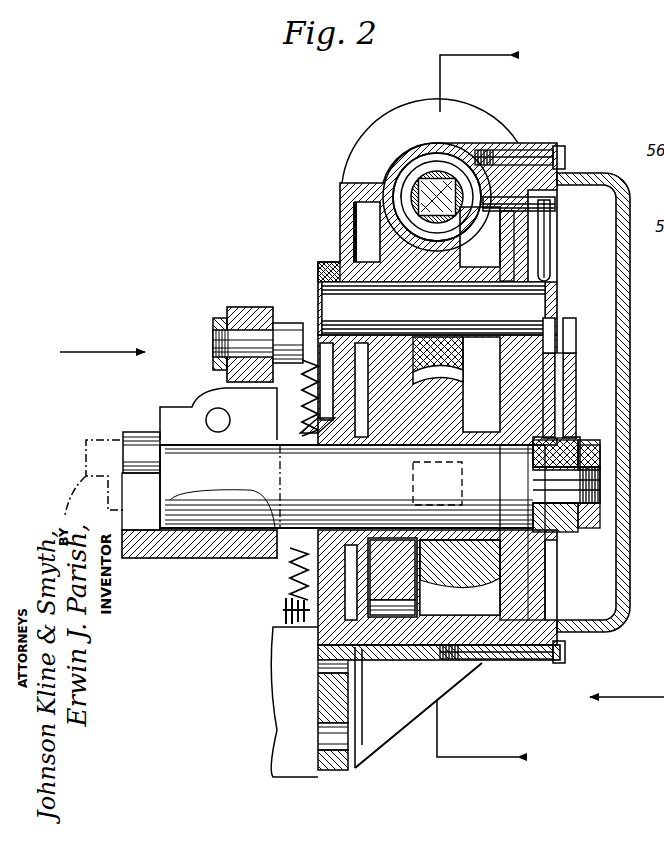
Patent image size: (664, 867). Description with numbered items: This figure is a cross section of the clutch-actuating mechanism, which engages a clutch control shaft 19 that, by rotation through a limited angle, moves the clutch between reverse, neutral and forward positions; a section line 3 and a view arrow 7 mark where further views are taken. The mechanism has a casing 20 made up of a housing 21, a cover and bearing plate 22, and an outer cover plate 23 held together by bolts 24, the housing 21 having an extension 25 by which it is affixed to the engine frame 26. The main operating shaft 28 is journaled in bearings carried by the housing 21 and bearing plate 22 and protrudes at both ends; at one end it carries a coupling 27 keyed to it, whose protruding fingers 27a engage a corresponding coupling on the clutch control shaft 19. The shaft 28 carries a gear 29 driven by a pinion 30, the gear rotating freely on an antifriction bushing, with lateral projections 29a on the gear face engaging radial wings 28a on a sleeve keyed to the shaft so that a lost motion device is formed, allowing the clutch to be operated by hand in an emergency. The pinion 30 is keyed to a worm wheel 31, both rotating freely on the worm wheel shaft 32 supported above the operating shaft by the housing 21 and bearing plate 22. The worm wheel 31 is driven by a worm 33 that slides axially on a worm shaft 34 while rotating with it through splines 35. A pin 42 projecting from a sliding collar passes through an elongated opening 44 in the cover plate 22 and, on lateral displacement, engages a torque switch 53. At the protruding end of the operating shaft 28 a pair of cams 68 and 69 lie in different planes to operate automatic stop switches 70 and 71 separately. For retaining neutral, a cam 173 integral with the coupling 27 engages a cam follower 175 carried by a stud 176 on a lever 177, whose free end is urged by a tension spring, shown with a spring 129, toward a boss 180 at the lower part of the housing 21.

The section line 3- 3 is at (550, 406).
The view arrow 7 is at (92, 352).
The clutch control shaft 19 is at (99, 440).
The casing 20 is at (336, 192).
The housing 21 is at (340, 222).
The cover and bearing plate 22 is at (548, 258).
The outer cover plate 23 is at (630, 265).
The bolts 24 is at (565, 157).
The extension 25 is at (318, 698).
The engine frame 26 is at (290, 662).
The coupling 27 is at (212, 556).
The protruding fingers 27a is at (143, 436).
The main operating shaft 28 is at (180, 540).
The radial wings 28a is at (462, 584).
The gear 29 is at (415, 603).
The lateral projections 29a is at (465, 478).
The pinion 30 is at (340, 248).
The worm wheel 31 is at (462, 362).
The worm wheel shaft 32 is at (545, 290).
The worm 33 is at (384, 184).
The worm shaft 34 is at (440, 192).
The splines 35 is at (402, 160).
The pin 42 is at (556, 205).
The elongated openings 44 is at (520, 152).
The torque switch 53 is at (560, 236).
The cam 68 is at (576, 363).
The cam 69 is at (552, 385).
The automatic stop switch 70 is at (571, 318).
The automatic stop switch 71 is at (550, 318).
The spring 129 is at (288, 580).
The cam 173 is at (287, 378).
The cam follower 175 is at (292, 322).
The stud 176 is at (214, 348).
The lever 177 is at (262, 306).
The boss 180 is at (284, 606).